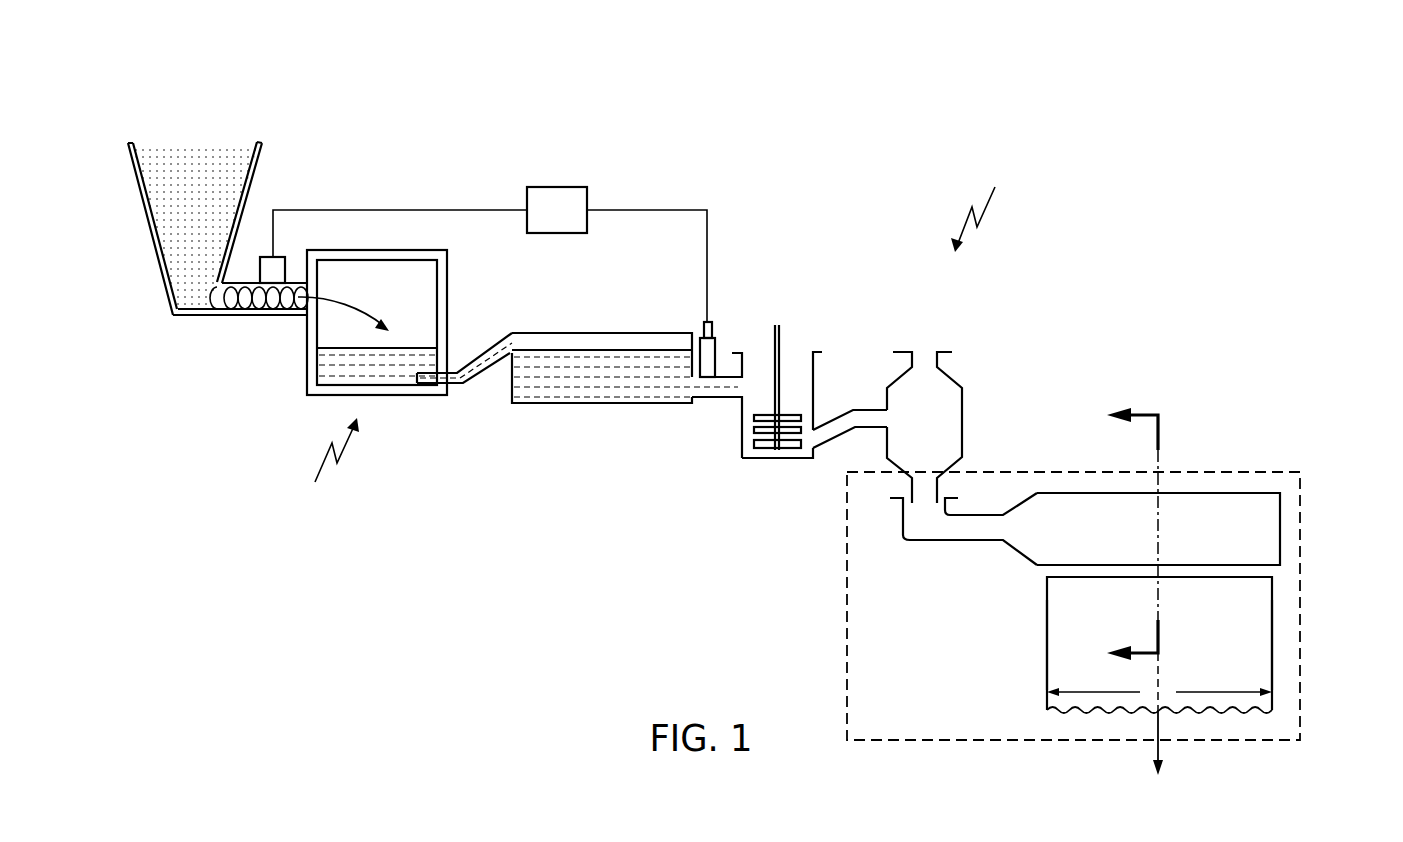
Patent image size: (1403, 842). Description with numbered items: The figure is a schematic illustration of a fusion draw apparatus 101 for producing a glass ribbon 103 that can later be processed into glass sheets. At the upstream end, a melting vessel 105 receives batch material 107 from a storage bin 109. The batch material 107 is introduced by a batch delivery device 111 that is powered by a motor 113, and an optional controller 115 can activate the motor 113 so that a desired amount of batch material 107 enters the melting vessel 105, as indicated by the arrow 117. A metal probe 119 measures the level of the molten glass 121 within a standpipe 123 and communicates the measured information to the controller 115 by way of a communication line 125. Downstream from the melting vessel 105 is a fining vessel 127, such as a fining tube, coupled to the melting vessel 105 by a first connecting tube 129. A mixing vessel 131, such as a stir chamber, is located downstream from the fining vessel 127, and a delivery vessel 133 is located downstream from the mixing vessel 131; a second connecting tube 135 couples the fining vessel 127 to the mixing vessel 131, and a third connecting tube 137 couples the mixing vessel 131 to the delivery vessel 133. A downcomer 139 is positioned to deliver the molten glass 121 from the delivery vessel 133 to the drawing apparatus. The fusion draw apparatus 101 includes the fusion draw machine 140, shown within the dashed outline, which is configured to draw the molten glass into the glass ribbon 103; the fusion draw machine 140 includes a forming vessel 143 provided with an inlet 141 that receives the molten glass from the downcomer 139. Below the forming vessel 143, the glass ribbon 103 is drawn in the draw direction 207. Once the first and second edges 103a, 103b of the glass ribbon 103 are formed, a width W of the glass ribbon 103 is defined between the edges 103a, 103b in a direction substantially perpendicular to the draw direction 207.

The fusion draw apparatus 101 is at (986, 205).
The glass ribbon 103 is at (1260, 618).
The first edge 103a is at (1045, 637).
The second edge 103b is at (1272, 650).
The melting vessel 105 is at (325, 464).
The batch material 107 is at (185, 153).
The storage bin 109 is at (148, 230).
The batch delivery device 111 is at (252, 303).
The motor 113 is at (277, 255).
The controller 115 is at (557, 187).
The arrow 117 is at (337, 300).
The metal probe 119 is at (703, 323).
The molten glass 121 is at (415, 348).
The standpipe 123 is at (717, 345).
The communication line 125 is at (643, 208).
The fining vessel 127 is at (593, 333).
The first connecting tube 129 is at (482, 350).
The mixing vessel 131 is at (815, 375).
The delivery vessel 133 is at (963, 395).
The second connecting tube 135 is at (723, 397).
The third connecting tube 137 is at (837, 442).
The downcomer 139 is at (943, 487).
The fusion draw machine 140 is at (1293, 470).
The inlet 141 is at (897, 520).
The forming vessel 143 is at (1230, 492).
The draw direction 207 is at (1160, 750).